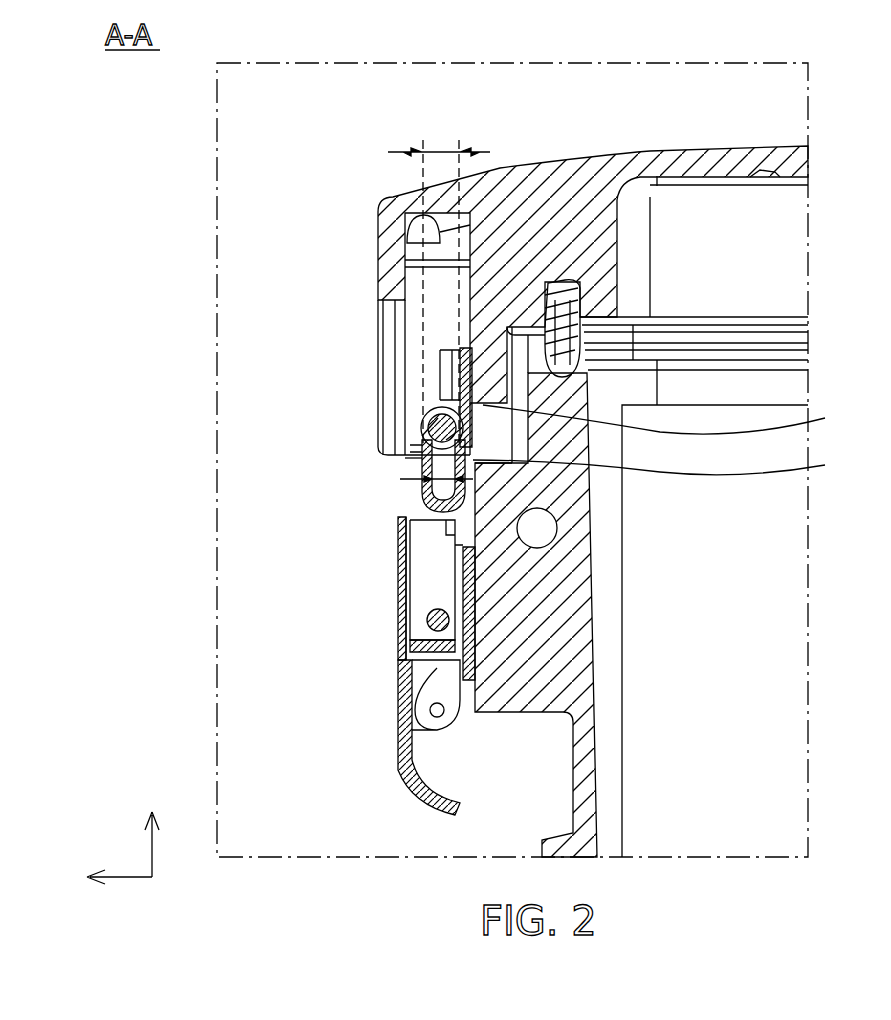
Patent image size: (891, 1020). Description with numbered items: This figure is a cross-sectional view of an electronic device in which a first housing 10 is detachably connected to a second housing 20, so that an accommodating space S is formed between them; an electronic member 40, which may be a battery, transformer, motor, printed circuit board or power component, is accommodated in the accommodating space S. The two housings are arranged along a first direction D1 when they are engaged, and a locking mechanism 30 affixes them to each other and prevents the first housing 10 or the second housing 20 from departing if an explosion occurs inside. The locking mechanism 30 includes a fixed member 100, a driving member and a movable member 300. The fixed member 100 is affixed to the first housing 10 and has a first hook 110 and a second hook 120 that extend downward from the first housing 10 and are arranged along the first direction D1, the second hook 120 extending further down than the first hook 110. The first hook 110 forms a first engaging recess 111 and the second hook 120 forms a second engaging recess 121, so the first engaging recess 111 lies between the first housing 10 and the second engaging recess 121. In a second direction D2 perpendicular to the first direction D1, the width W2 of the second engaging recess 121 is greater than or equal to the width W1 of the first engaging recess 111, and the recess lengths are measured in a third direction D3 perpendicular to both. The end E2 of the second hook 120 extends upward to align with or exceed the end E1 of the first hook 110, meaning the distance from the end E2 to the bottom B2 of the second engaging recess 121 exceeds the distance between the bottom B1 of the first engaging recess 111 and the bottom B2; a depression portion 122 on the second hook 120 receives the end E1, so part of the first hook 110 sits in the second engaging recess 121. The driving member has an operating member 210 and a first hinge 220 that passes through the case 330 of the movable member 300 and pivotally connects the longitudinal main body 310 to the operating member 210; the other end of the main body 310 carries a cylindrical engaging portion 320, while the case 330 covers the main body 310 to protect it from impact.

The first housing 10 is at (690, 162).
The second housing 20 is at (597, 762).
The locking mechanism 30 is at (383, 565).
The electronic member 40 is at (782, 405).
The accommodating space S is at (775, 387).
The fixed member 100 is at (396, 305).
The first hook 110 is at (428, 428).
The first engaging recess 111 is at (452, 358).
The second hook 120 is at (455, 500).
The second engaging recess 121 is at (420, 456).
The depression portion 122 is at (458, 445).
The operating member 210 is at (400, 705).
The first hinge 220 is at (428, 623).
The movable member 300 is at (400, 517).
The main body 310 is at (420, 590).
The engaging portion 320 is at (470, 395).
The case 330 is at (415, 646).
The bottom of the first engaging recess B1 is at (674, 418).
The bottom of the second engaging recess B2 is at (669, 466).
The end of the first hook E1 is at (450, 408).
The end of the second hook E2 is at (455, 425).
The width of the first engaging recess W1 is at (439, 279).
The width of the second engaging recess W2 is at (400, 479).
The first direction D1 is at (153, 829).
The second direction D2 is at (97, 878).
The third direction D3 is at (182, 878).